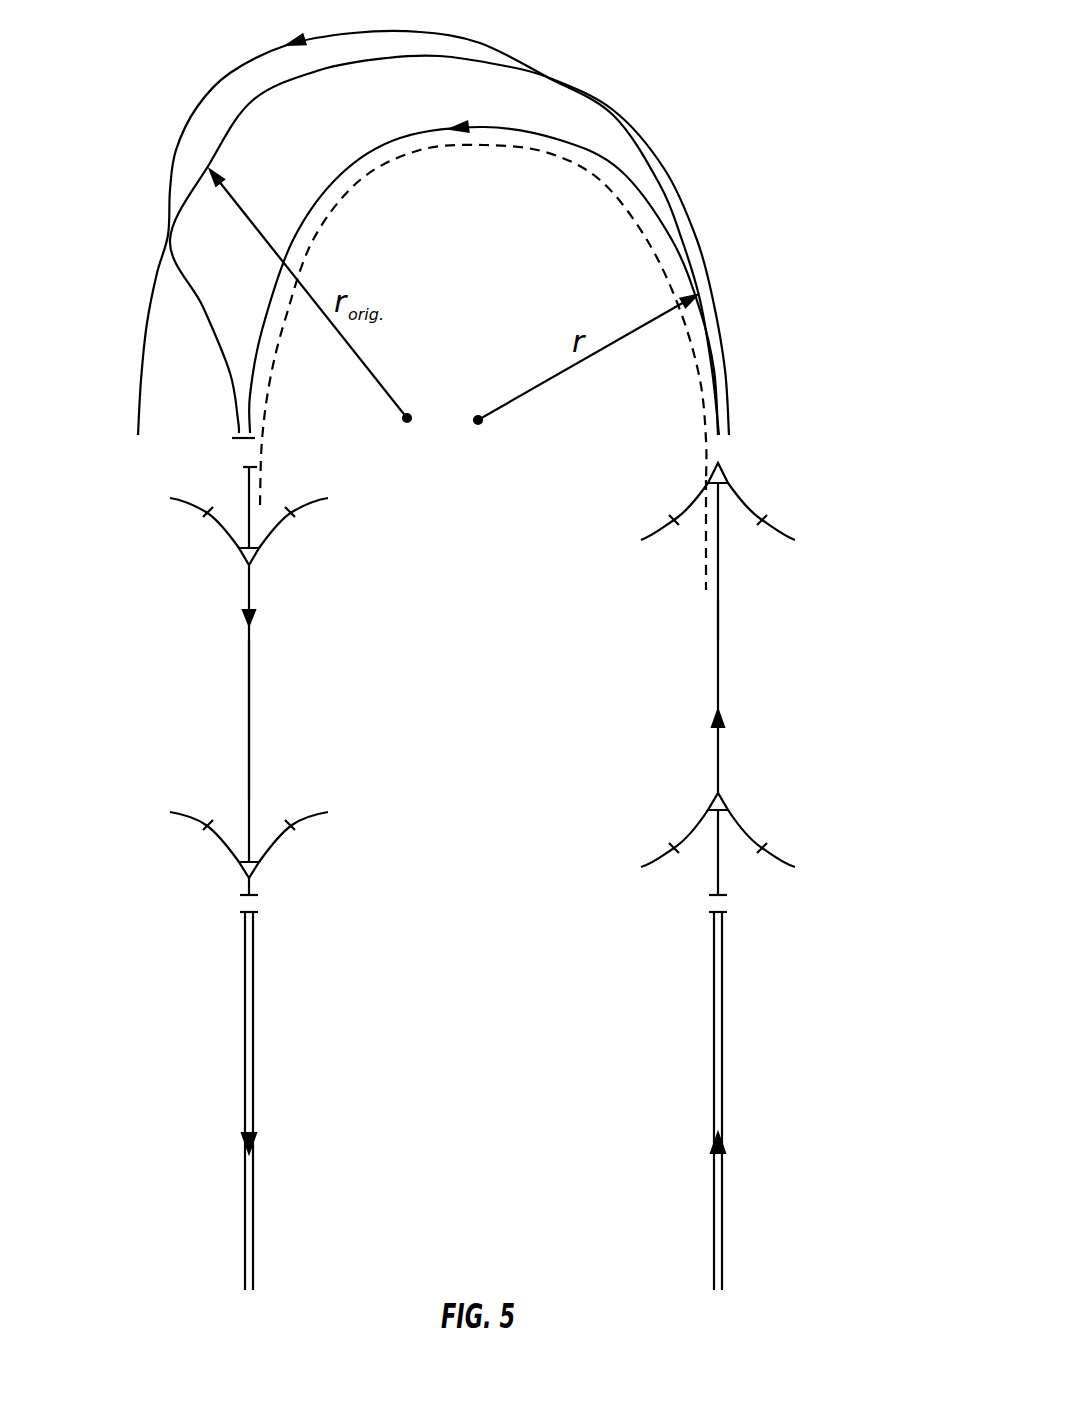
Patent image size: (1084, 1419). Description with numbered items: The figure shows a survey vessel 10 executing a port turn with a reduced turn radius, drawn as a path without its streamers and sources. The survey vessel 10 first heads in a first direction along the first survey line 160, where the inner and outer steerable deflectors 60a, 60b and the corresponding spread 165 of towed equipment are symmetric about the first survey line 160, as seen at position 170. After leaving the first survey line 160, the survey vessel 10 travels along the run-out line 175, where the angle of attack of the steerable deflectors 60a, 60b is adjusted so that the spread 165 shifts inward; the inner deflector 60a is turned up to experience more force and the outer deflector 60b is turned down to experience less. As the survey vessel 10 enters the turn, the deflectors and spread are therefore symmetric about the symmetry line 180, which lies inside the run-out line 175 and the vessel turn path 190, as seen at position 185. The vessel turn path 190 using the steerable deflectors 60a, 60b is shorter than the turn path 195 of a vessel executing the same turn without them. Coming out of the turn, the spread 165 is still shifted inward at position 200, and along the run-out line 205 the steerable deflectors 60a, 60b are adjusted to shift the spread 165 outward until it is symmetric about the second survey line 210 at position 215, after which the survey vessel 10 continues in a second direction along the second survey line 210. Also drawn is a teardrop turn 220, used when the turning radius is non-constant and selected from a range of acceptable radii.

The survey vessel 10 is at (242, 556).
The inner steerable deflector 60a is at (483, 681).
The outer steerable deflector 60b is at (483, 681).
The first survey line 160 is at (722, 975).
The spread 165 is at (204, 544).
The position 170 is at (868, 830).
The run-out line 175 is at (718, 663).
The symmetry line 180 is at (704, 557).
The position 185 is at (868, 505).
The vessel turn path 190 is at (620, 170).
The turn path without steerable deflectors 195 is at (588, 98).
The position 200 is at (62, 535).
The run-out line 205 is at (249, 722).
The second survey line 210 is at (245, 975).
The position 215 is at (62, 877).
The teardrop turn 220 is at (355, 32).